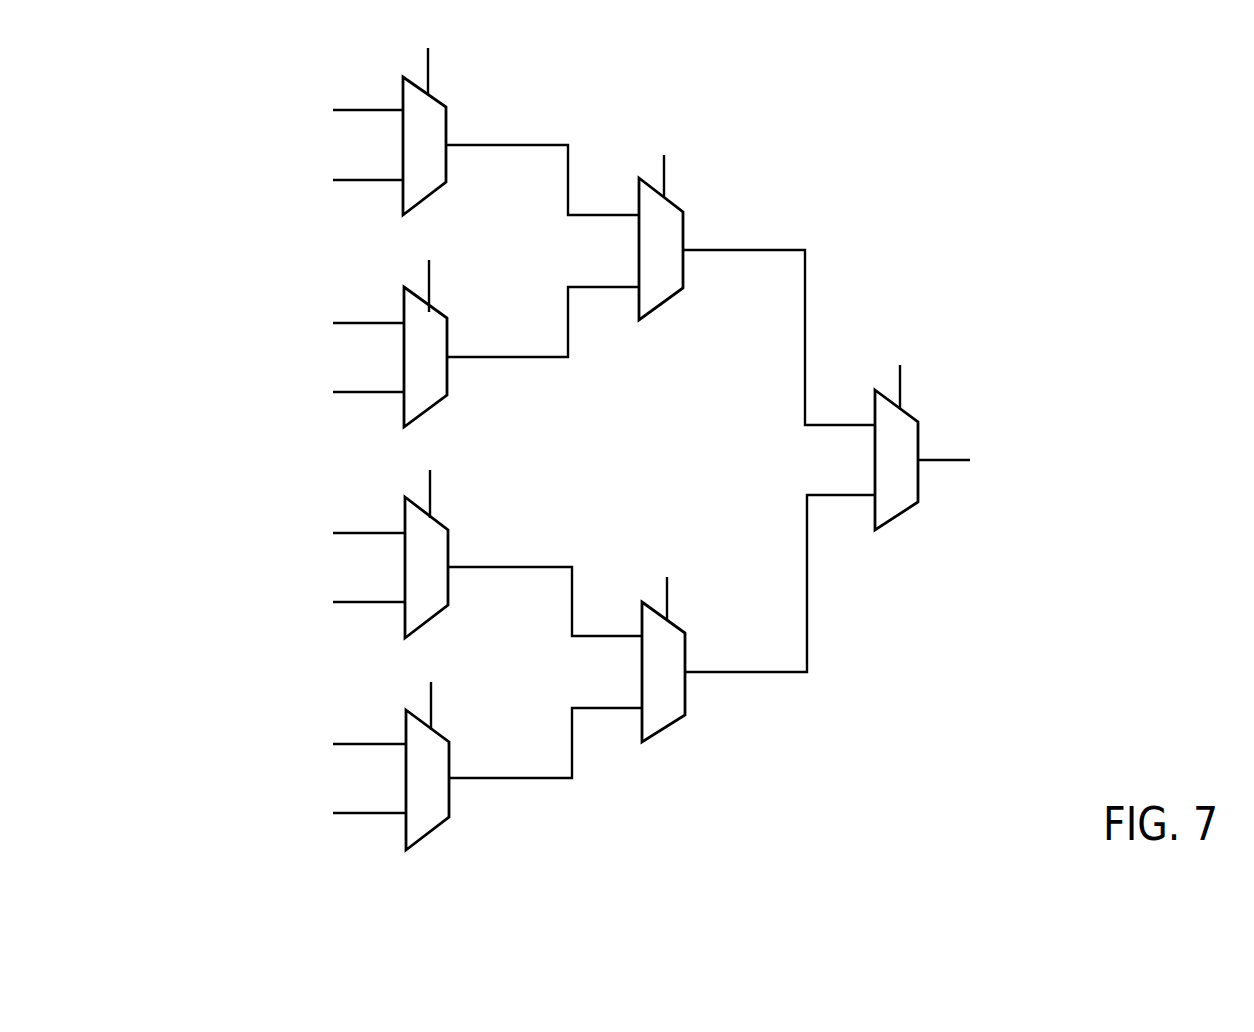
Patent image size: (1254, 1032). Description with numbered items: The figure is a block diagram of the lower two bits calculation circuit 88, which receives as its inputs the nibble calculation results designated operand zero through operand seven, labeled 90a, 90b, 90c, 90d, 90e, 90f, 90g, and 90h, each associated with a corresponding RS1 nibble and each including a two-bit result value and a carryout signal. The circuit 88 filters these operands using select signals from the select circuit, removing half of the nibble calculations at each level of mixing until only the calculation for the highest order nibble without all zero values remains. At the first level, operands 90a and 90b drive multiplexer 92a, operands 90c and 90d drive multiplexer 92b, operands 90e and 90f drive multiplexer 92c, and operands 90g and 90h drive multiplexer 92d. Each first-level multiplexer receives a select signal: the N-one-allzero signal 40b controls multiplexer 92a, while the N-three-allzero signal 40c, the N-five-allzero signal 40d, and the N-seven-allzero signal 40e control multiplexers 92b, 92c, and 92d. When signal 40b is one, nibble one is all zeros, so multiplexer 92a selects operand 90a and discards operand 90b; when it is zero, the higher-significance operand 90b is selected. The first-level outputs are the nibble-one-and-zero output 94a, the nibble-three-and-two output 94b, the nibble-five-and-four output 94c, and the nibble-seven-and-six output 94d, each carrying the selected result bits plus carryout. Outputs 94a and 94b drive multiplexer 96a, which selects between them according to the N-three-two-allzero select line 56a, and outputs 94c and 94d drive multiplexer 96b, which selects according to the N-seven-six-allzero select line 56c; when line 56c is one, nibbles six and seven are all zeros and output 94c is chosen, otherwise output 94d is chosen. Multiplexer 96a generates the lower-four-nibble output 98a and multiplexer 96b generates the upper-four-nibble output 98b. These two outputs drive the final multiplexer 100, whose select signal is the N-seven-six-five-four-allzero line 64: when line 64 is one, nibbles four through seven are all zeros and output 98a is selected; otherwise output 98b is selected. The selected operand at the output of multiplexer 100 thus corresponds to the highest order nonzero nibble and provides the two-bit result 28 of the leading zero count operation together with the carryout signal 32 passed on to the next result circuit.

The lower two bits calculation circuit 88 is at (1108, 125).
The Operand 0 90a is at (240, 800).
The Operand 1 90b is at (240, 733).
The Operand 2 90c is at (240, 588).
The Operand 3 90d is at (240, 518).
The Operand 4 90e is at (240, 382).
The Operand 5 90f is at (240, 310).
The Operand 6 90g is at (240, 172).
The Operand 7 90h is at (240, 98).
The N1allzero output 40b is at (453, 683).
The N3allzero output 40c is at (445, 468).
The N5allzero output 40d is at (487, 245).
The N7allzero output 40e is at (472, 40).
The N32allzero select line 56a is at (690, 550).
The N76allzero select line 56c is at (673, 128).
The N7654allzero select signal line 64 is at (905, 332).
The multiplexer 92a is at (428, 840).
The multiplexer 92b is at (437, 620).
The multiplexer 92c is at (448, 318).
The multiplexer 92d is at (437, 198).
The N10 1:0 +CO output 94a is at (553, 805).
The N32 1:0 +CO output 94b is at (547, 540).
The N54 1:0 +CO output 94c is at (520, 388).
The N76 1:0 +CO output 94d is at (523, 117).
The multiplexer 96a is at (678, 720).
The multiplexer 96b is at (665, 303).
The N3210 1:0 +CO output 98a is at (847, 690).
The N7654 1:0 +CO output 98b is at (762, 222).
The multiplexer 100 is at (900, 517).
The RESULT 1:0 28 is at (997, 472).
The 10CARRYOUT signal 32 is at (1140, 472).